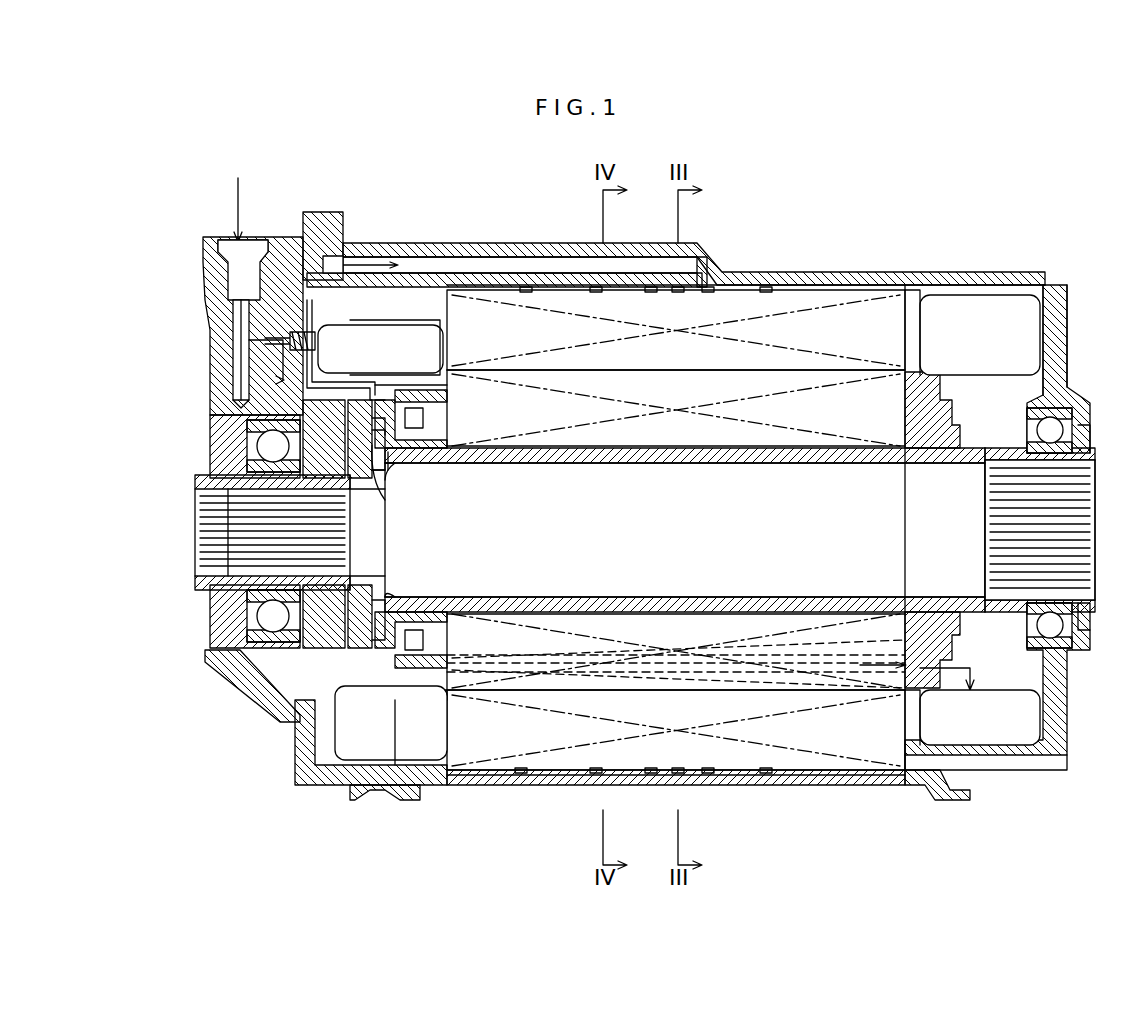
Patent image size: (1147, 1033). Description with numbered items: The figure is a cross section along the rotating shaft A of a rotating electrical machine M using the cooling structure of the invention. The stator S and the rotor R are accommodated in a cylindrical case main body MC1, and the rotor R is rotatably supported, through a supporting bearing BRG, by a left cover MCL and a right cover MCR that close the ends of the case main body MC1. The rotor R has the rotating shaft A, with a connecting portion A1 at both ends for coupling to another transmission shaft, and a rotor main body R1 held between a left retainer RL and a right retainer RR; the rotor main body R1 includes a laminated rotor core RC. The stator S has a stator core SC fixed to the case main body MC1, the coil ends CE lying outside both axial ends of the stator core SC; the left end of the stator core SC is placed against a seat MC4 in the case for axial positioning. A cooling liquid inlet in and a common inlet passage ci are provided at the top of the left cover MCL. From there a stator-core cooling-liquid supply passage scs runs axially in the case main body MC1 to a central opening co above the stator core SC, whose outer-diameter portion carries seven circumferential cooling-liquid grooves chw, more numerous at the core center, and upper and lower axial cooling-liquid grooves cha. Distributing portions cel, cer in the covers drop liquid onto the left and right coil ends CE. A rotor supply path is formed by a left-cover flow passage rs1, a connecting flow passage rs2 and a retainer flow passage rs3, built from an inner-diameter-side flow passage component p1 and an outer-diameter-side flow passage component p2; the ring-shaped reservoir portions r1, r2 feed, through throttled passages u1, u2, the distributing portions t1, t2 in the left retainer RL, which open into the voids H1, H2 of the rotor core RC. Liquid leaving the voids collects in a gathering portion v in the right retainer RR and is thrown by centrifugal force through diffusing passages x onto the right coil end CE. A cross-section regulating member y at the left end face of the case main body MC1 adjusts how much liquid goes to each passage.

The rotating electrical machine M is at (896, 230).
The case main body MC1 is at (750, 278).
The seat MC4 is at (445, 285).
The left cover MCL is at (225, 330).
The right cover MCR is at (1058, 275).
The stator-core cooling-liquid supply passage scs is at (480, 270).
The cross-section regulating member y is at (345, 255).
The cooling liquid inlet in is at (214, 238).
The common inlet passage ci is at (235, 285).
The left-cover flow passage rs1 is at (245, 385).
The connecting flow passage rs2 is at (395, 430).
The retainer flow passage rs3 is at (410, 440).
The supporting bearing BRG is at (225, 668).
The rotating shaft A is at (1100, 436).
The connecting portion A1 is at (200, 520).
The stator S is at (778, 785).
The stator core SC is at (728, 785).
The circumferential cooling-liquid grooves chw is at (522, 295).
The axial cooling-liquid grooves cha is at (612, 305).
The central opening co is at (686, 265).
The left distributing portion cel is at (405, 310).
The right distributing portion cer is at (978, 292).
The rotor R is at (843, 320).
The left retainer RL is at (495, 530).
The right retainer RR is at (905, 418).
The rotor main body R1 is at (742, 438).
The rotor core RC is at (745, 630).
The inner-diameter-side reservoir portion r1 is at (437, 415).
The outer-diameter-side reservoir portion r2 is at (435, 397).
The inner-diameter-side flow passage component p1 is at (372, 465).
The outer-diameter-side flow passage component p2 is at (335, 360).
The inner-diameter-side throttled passages u1 is at (435, 625).
The outer-diameter-side throttled passages u2 is at (418, 760).
The inner-diameter-side distributing portion t1 is at (455, 655).
The outer-diameter-side distributing portion t2 is at (450, 672).
The inner-diameter-side voids H1 is at (570, 665).
The outer-diameter-side voids H2 is at (650, 690).
The gathering portion v is at (905, 660).
The cooling-liquid diffusing passages x is at (945, 672).
The coil ends CE is at (360, 765).